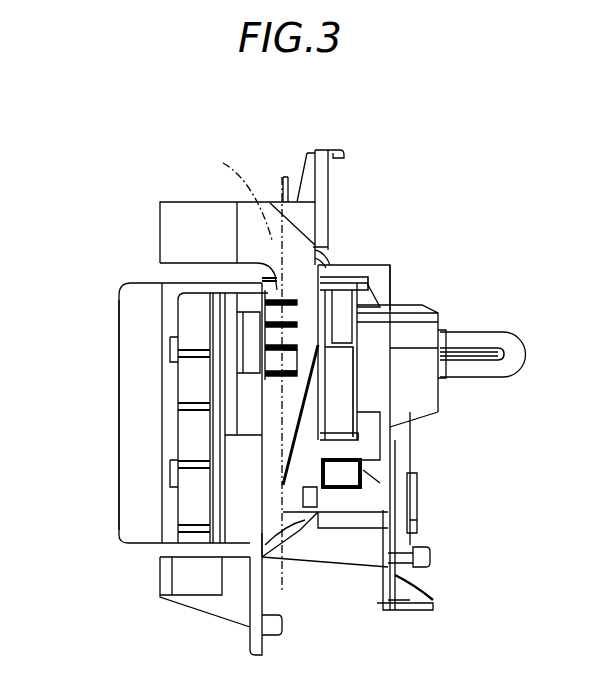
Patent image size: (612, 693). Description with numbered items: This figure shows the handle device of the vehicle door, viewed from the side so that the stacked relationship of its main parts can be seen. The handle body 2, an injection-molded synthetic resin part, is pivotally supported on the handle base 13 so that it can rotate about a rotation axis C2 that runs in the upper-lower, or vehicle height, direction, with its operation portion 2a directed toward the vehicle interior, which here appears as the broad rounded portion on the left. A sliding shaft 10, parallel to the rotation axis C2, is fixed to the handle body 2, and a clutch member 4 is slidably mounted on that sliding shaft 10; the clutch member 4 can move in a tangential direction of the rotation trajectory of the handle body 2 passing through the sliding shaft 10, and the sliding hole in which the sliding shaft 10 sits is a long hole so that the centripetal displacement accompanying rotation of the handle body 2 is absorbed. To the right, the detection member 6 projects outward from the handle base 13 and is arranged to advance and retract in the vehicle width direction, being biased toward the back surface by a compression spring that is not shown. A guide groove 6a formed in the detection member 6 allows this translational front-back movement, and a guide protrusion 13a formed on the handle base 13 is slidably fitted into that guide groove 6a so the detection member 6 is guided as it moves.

The handle body 2 is at (100, 351).
The operation portion 2a is at (120, 420).
The clutch member 4 is at (342, 362).
The detection member 6 is at (487, 368).
The guide groove 6a is at (500, 363).
The sliding shaft 10 is at (370, 270).
The handle base 13 is at (383, 590).
The guide protrusion 13a is at (450, 332).
The rotation axis C2 is at (234, 373).